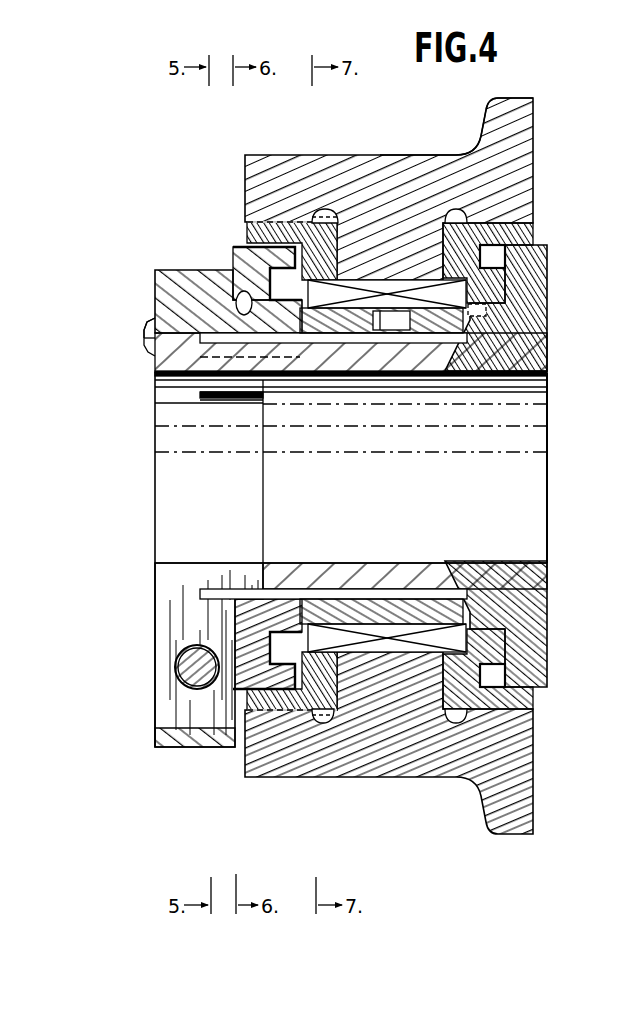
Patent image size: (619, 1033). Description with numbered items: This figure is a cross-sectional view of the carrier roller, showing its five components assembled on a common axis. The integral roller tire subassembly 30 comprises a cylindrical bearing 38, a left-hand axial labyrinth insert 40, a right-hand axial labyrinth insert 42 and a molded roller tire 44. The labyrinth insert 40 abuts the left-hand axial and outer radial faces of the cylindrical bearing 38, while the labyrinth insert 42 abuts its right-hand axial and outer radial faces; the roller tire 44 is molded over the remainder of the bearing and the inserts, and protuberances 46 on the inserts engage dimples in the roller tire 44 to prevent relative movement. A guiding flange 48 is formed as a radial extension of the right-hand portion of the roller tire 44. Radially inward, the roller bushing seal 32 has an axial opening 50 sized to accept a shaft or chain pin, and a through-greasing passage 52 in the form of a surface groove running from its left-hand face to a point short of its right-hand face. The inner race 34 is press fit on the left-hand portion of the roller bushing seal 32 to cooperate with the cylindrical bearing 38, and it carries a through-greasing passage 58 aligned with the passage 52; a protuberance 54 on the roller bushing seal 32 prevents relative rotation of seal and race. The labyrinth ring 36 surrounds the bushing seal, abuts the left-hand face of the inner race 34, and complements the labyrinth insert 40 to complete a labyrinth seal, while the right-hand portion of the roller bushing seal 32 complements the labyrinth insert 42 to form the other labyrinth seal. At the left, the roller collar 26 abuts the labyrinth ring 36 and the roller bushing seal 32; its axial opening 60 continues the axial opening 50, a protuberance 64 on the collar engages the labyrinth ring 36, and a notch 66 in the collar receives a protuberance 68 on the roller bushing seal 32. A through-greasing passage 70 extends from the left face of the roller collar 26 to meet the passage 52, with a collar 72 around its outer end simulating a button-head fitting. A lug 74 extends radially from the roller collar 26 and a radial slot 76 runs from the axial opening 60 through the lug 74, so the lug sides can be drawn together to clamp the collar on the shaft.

The roller collar 26 is at (180, 272).
The roller tire subassembly 30 is at (346, 158).
The roller bushing seal 32 is at (547, 320).
The inner race 34 is at (382, 580).
The labyrinth ring 36 is at (232, 250).
The cylindrical bearing 38 is at (412, 333).
The left-hand axial labyrinth insert 40 is at (240, 222).
The right-hand axial labyrinth insert 42 is at (537, 214).
The roller tire 44 is at (397, 157).
The protuberances 46 is at (331, 217).
The guiding flange 48 is at (492, 98).
The axial opening 50 is at (548, 380).
The through-greasing passage 52 is at (410, 348).
The protuberance 54 is at (480, 334).
The through-greasing passage 58 is at (366, 338).
The axial opening 60 is at (160, 380).
The protuberance 64 is at (238, 292).
The notch 66 is at (244, 402).
The protuberance 68 is at (208, 402).
The through-greasing passage 70 is at (148, 345).
The collar 72 is at (148, 320).
The lug 74 is at (155, 652).
The radial slot 76 is at (220, 614).